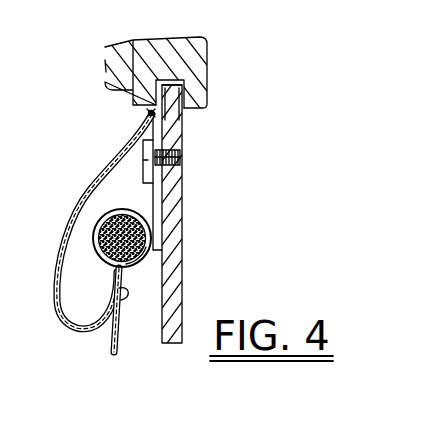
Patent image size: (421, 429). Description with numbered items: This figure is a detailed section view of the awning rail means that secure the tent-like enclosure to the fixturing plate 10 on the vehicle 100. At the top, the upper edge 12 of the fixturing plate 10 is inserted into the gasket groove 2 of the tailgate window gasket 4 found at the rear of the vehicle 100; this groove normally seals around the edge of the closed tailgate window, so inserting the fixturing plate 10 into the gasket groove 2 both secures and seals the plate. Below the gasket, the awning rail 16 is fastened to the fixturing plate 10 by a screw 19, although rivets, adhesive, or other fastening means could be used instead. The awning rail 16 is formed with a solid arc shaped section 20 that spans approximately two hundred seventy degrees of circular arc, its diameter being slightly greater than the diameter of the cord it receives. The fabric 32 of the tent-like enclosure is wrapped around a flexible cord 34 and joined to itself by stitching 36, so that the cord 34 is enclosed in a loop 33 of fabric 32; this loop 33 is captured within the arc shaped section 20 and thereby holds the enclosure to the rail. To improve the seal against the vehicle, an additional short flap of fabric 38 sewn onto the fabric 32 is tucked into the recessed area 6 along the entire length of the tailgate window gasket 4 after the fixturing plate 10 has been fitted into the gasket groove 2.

The vehicle 100 is at (107, 60).
The tailgate window gasket 4 is at (200, 62).
The gasket groove 2 is at (190, 82).
The recessed area 6 is at (150, 114).
The upper edge 12 is at (175, 103).
The flap of fabric 38 is at (99, 176).
The screw 19 is at (178, 162).
The arc shaped section 20 is at (94, 225).
The fixturing plate 10 is at (184, 212).
The awning rail 16 is at (160, 237).
The flexible cord 34 is at (148, 263).
The loop 33 is at (150, 278).
The stitching 36 is at (123, 299).
The fabric 32 is at (107, 335).